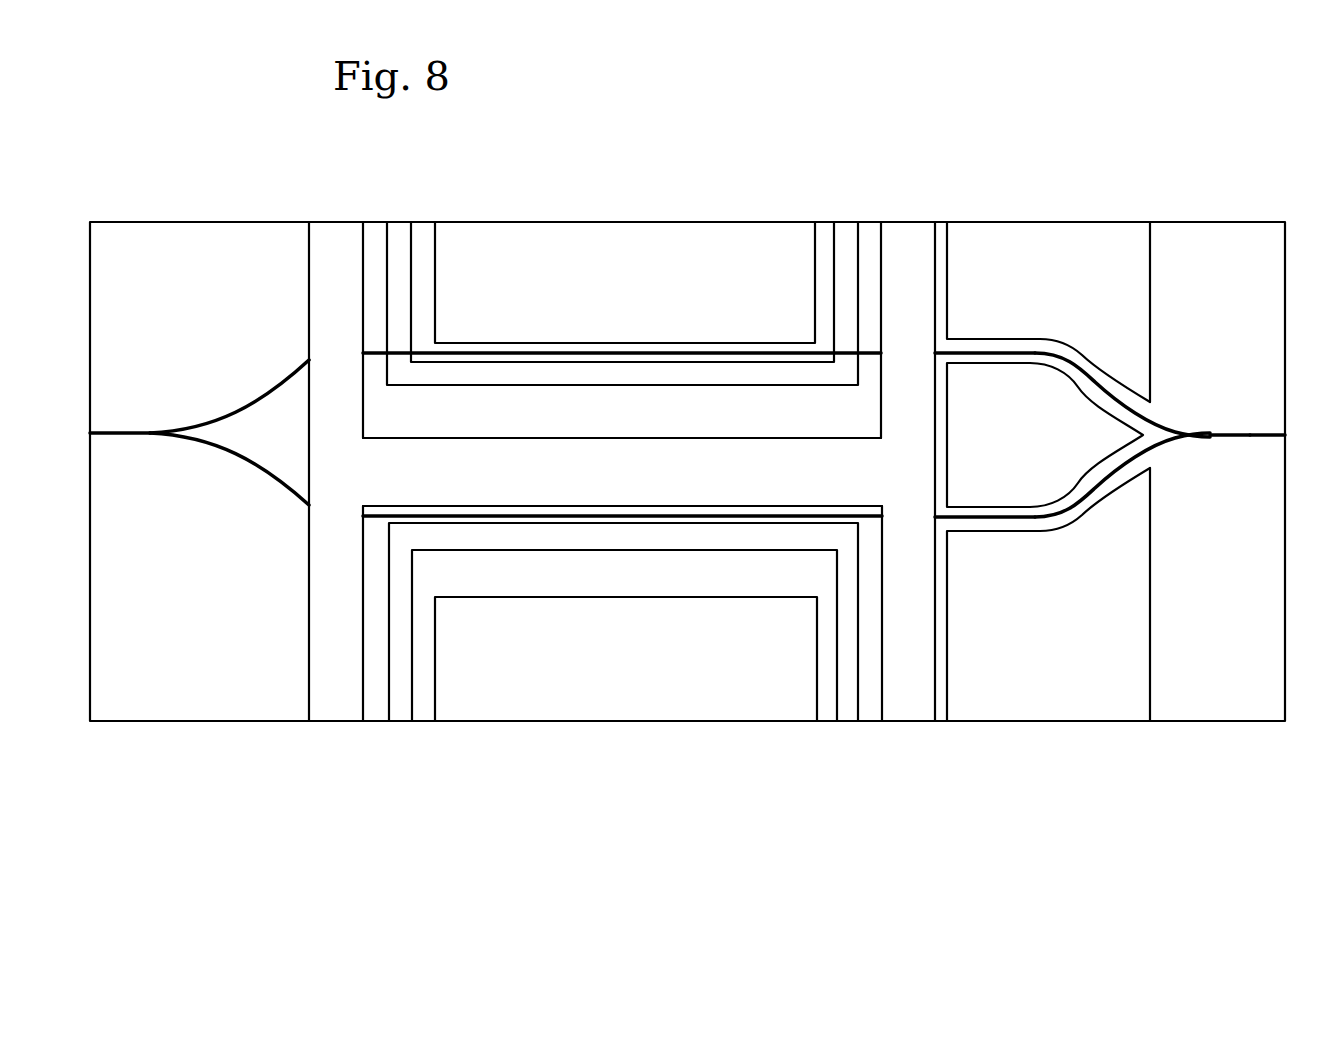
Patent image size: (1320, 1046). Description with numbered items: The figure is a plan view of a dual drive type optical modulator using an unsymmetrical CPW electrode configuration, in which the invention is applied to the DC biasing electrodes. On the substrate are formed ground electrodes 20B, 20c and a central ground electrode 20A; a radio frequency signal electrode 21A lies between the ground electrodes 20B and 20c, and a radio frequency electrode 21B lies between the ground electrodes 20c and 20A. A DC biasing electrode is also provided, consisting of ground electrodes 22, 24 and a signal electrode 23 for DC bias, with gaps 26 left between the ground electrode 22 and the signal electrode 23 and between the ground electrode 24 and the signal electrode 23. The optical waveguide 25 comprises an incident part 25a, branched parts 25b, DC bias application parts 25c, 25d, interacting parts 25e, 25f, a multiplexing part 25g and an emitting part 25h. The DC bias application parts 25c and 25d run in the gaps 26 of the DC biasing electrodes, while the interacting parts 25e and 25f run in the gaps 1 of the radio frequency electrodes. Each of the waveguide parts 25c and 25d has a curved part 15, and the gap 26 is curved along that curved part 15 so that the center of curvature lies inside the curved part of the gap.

The gap 1 is at (757, 343).
The curved part 15 is at (1083, 358).
The central ground electrode 20A is at (575, 487).
The ground electrode 20B is at (567, 240).
The ground electrode 20c is at (703, 710).
The radio frequency signal electrode 21A is at (562, 372).
The radio frequency electrode 21B is at (497, 542).
The ground electrode 22 is at (1068, 240).
The signal electrode 23 is at (1034, 446).
The ground electrode 24 is at (1057, 653).
The optical waveguide 25 is at (688, 463).
The incident part 25a is at (1263, 435).
The branched parts 25b is at (1222, 435).
The DC bias application part 25c is at (1005, 353).
The DC bias application part 25d is at (1000, 518).
The interacting part 25e is at (643, 345).
The interacting part 25f is at (677, 518).
The multiplexing part 25g is at (152, 428).
The emitting part 25h is at (113, 430).
The gap 26 is at (1077, 343).